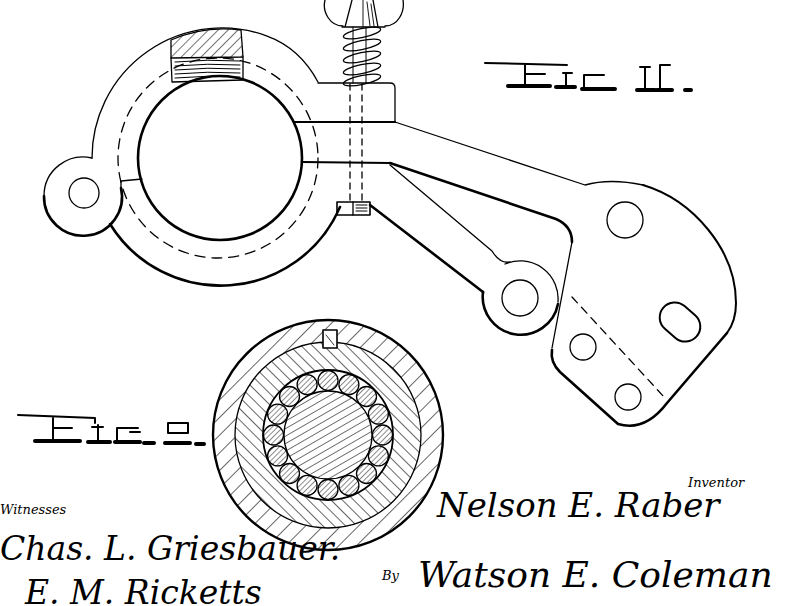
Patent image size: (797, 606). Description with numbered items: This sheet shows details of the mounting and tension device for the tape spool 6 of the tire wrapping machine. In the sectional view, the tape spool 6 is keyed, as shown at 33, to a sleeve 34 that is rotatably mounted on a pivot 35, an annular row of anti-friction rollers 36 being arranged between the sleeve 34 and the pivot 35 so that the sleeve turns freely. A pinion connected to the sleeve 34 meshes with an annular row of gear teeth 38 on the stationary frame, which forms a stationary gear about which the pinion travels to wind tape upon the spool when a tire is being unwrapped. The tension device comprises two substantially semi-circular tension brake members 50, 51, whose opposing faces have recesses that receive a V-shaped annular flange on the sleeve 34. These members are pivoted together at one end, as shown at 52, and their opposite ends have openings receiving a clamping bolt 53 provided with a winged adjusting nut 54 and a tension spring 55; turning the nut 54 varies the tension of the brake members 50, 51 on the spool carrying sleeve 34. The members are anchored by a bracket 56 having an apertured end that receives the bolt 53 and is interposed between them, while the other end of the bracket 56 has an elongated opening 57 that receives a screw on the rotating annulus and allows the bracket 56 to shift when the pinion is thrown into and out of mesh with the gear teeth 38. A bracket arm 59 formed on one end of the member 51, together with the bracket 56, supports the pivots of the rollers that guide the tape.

In FIG. 9, the tape spool 6 is at (248, 348).
In FIG. 9, the key 33 is at (338, 330).
In FIG. 9, the sleeve 34 is at (400, 395).
In FIG. 9, the pivot 35 is at (362, 433).
In FIG. 9, the anti-friction rollers 36 is at (360, 375).
In FIG. 10, the gear teeth 38 is at (219, 41).
In FIG. 10, the tension brake member 50 is at (137, 67).
In FIG. 10, the tension brake member 51 is at (167, 267).
In FIG. 10, the pivot 52 is at (80, 183).
In FIG. 10, the clamping bolt 53 is at (360, 217).
In FIG. 10, the winged adjusting nut 54 is at (378, 12).
In FIG. 10, the tension spring 55 is at (380, 63).
In FIG. 10, the bracket 56 is at (493, 168).
In FIG. 10, the elongated opening 57 is at (679, 302).
In FIG. 10, the bracket arm 59 is at (473, 277).